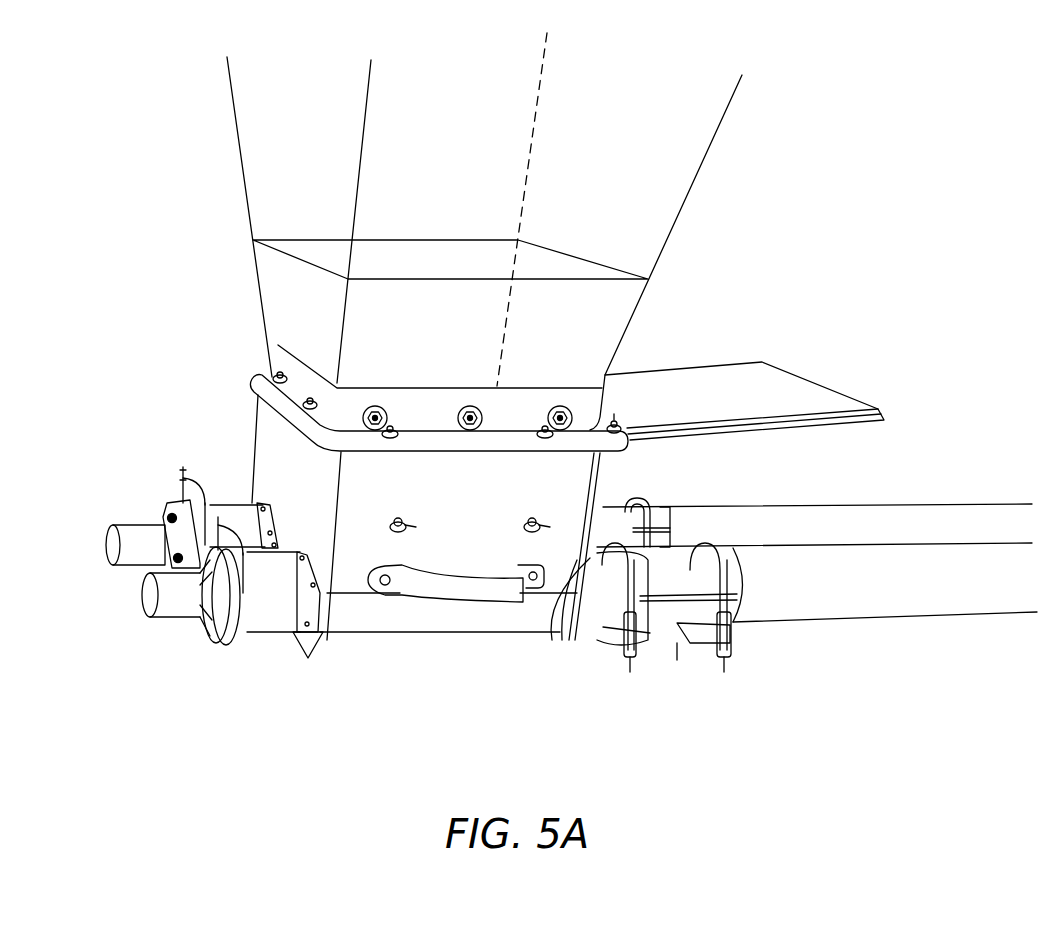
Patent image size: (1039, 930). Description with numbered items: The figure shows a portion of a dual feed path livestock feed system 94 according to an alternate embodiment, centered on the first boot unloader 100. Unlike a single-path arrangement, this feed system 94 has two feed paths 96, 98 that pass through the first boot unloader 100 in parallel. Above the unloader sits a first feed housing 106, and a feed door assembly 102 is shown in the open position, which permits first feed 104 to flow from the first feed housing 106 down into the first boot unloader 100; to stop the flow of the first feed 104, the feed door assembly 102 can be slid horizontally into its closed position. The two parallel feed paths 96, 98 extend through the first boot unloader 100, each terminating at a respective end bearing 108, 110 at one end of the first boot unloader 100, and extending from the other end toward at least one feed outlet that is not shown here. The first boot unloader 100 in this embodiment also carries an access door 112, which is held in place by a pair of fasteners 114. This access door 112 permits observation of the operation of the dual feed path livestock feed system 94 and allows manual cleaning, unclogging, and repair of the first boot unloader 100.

The dual feed path livestock feed system 94 is at (908, 170).
The feed path 96 is at (963, 580).
The feed path 98 is at (947, 517).
The first boot unloader 100 is at (272, 457).
The feed door assembly 102 is at (750, 385).
The first feed 104 is at (363, 258).
The first feed housing 106 is at (245, 79).
The end bearing 108 is at (153, 593).
The end bearing 110 is at (118, 545).
The access door 112 is at (563, 558).
The fasteners 114 is at (522, 530).